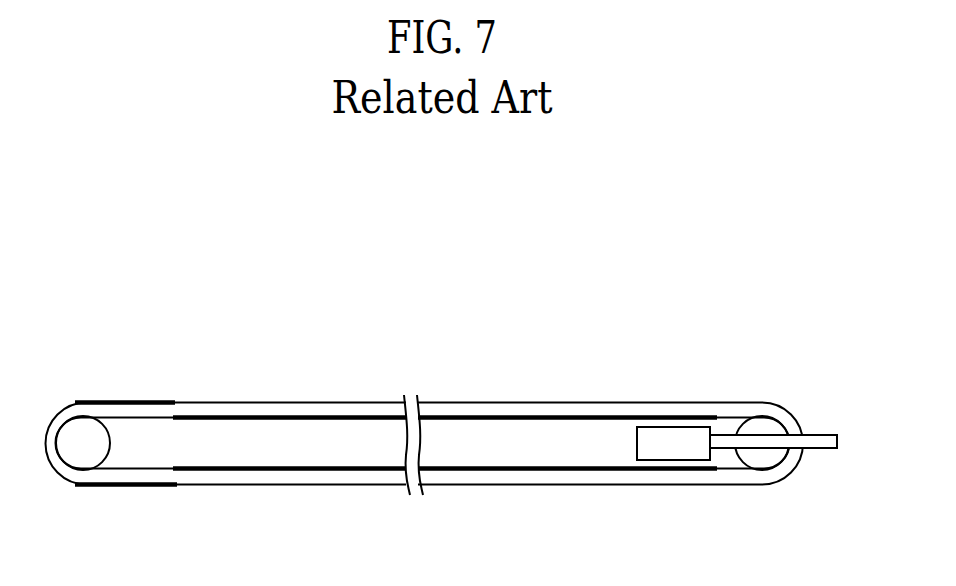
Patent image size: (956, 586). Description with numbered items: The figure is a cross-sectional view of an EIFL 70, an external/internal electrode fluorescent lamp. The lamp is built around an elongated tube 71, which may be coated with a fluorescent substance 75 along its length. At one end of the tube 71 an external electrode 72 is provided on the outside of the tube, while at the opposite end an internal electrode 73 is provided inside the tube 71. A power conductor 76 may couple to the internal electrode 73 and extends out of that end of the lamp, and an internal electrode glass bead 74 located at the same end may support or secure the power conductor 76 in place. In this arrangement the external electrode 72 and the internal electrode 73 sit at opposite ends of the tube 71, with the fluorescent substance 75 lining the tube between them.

The EIFL 70 is at (445, 423).
The tube 71 is at (355, 401).
The external electrode 72 is at (123, 401).
The internal electrode 73 is at (673, 453).
The internal electrode glass bead 74 is at (92, 455).
The fluorescent substance 75 is at (335, 458).
The power conductor 76 is at (818, 442).